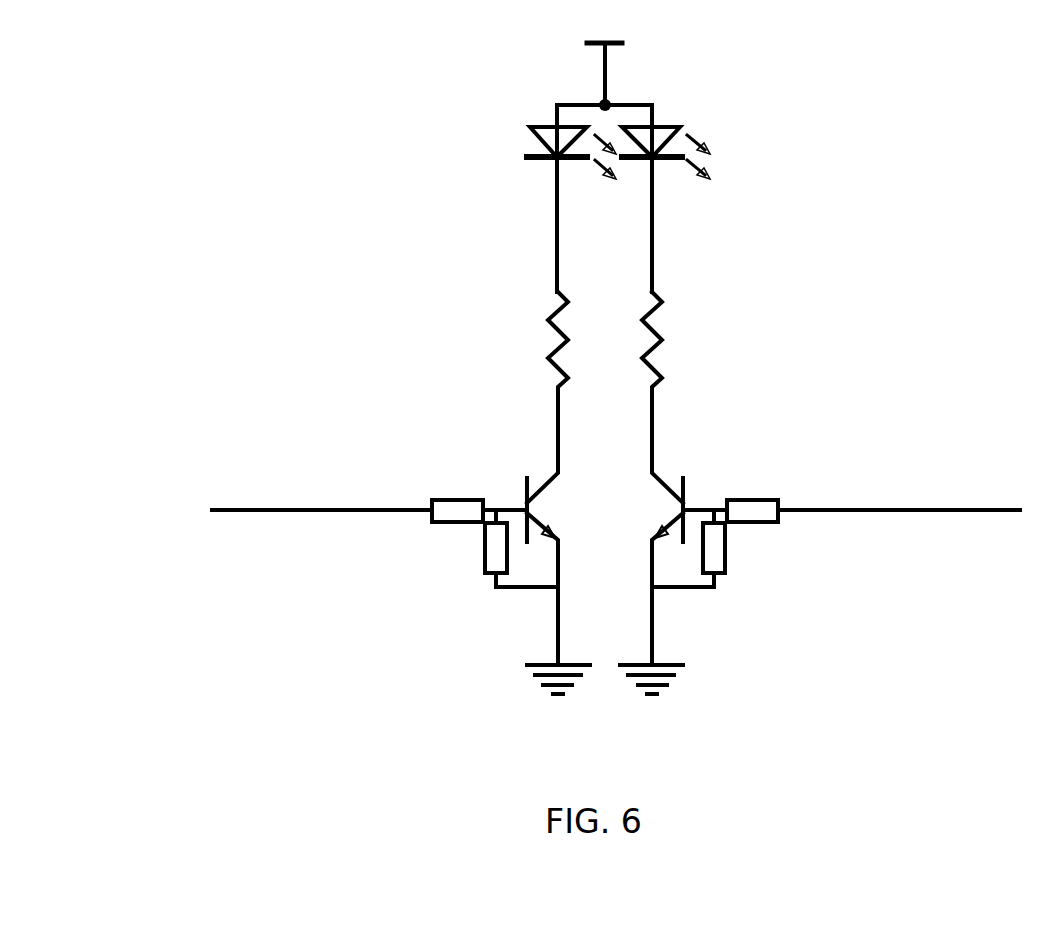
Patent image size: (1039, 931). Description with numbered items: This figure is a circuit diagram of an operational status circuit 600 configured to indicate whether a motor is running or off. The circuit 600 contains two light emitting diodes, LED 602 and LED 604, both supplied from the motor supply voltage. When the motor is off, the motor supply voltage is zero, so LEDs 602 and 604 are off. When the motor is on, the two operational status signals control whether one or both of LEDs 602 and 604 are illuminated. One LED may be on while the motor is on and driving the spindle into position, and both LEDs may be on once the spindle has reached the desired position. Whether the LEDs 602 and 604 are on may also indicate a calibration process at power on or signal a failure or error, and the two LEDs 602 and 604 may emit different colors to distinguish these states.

The LED driver circuit 600 is at (238, 214).
The LED 602 is at (508, 135).
The LED 604 is at (725, 148).